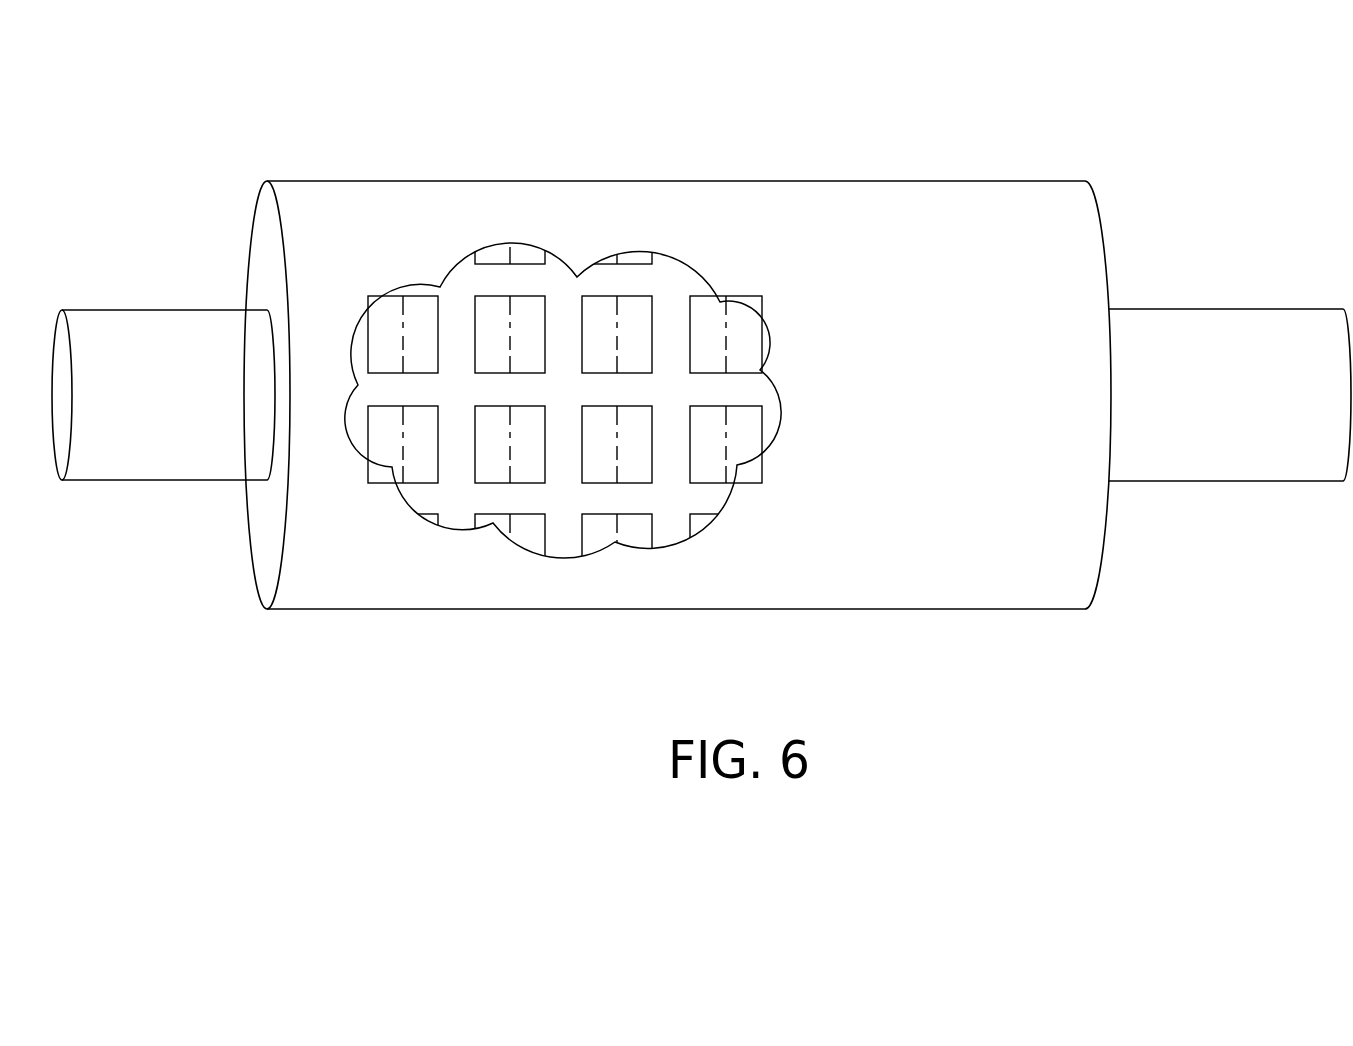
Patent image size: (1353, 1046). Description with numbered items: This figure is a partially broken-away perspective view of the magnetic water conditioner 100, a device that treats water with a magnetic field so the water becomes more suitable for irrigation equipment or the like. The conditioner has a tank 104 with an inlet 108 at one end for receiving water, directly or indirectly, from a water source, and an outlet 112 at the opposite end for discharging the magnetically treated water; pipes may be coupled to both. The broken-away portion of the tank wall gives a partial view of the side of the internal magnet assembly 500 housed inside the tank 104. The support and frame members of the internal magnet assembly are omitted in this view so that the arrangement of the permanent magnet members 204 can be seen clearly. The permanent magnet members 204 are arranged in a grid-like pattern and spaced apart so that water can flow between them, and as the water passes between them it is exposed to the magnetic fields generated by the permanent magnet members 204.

The magnetic water conditioner 100 is at (504, 122).
The tank 104 is at (802, 180).
The inlet 108 is at (164, 308).
The outlet 112 is at (1223, 308).
The permanent magnet members 204 is at (390, 310).
The internal magnet assembly 500 is at (866, 324).